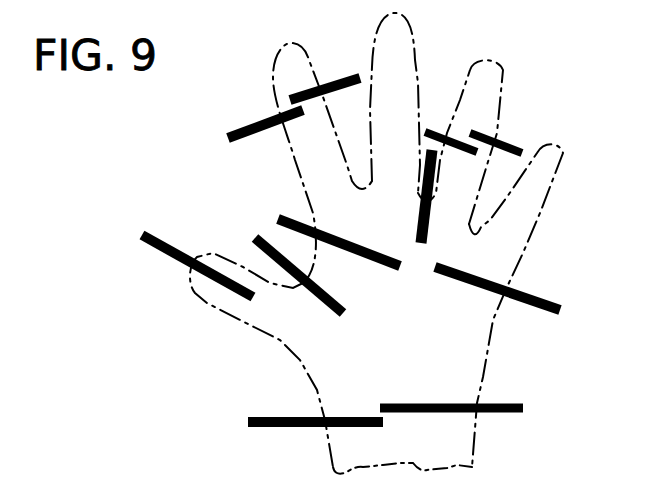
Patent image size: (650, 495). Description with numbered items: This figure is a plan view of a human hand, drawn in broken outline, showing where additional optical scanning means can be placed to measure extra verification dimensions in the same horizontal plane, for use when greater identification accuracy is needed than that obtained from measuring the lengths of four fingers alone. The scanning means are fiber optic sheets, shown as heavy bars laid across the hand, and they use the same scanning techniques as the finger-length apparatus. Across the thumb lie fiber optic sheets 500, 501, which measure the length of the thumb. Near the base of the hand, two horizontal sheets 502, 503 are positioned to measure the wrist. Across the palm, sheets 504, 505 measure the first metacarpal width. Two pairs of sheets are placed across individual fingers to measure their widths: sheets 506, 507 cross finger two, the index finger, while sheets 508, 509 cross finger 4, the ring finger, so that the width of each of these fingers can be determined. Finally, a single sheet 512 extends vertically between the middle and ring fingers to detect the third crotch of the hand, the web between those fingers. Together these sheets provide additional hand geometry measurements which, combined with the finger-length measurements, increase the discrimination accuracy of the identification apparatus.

The finger 4 is at (590, 231).
The fiber optic sheet 500 is at (163, 253).
The fiber optic sheet 501 is at (256, 244).
The fiber optic sheet 502 is at (293, 427).
The fiber optic sheet 503 is at (501, 412).
The fiber optic sheet 504 is at (302, 226).
The fiber optic sheet 505 is at (537, 298).
The fiber optic sheet 506 is at (250, 128).
The fiber optic sheet 507 is at (338, 84).
The fiber optic sheet 508 is at (437, 128).
The fiber optic sheet 509 is at (513, 142).
The fiber optic sheet 512 is at (422, 222).